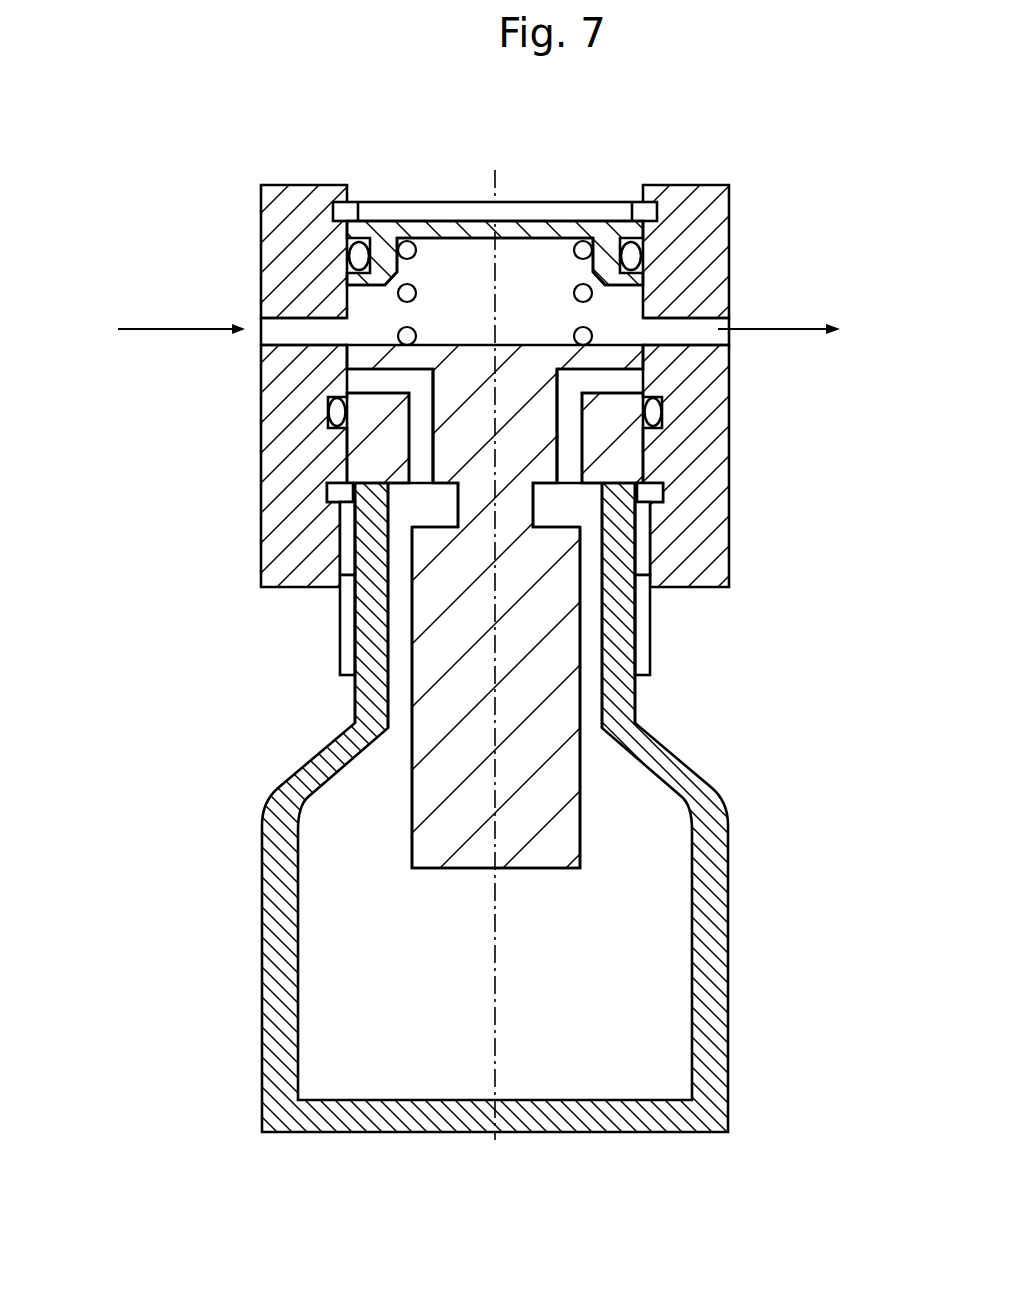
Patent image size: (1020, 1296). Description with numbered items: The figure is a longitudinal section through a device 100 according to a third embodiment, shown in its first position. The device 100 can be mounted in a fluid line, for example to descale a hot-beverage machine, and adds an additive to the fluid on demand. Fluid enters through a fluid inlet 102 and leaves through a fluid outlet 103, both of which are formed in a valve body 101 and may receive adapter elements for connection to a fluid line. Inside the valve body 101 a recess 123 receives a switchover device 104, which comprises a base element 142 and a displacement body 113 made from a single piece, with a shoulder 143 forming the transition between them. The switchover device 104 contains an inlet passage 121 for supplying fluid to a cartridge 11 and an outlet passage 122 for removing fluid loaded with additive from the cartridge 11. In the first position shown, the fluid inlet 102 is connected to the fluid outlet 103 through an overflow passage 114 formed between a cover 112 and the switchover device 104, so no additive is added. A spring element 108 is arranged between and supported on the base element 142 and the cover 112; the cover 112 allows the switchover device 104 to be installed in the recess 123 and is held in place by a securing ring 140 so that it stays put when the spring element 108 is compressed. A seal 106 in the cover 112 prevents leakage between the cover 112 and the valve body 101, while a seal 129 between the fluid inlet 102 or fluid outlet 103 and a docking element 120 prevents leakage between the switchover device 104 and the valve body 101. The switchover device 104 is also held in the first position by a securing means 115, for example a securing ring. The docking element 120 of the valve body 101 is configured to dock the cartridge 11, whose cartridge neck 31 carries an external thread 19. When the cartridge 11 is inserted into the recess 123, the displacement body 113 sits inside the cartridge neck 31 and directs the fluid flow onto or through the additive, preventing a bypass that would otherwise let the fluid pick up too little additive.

The device 100 is at (214, 235).
The valve body 101 is at (270, 292).
The fluid inlet 102 is at (275, 325).
The fluid outlet 103 is at (715, 338).
The switchover device 104 is at (510, 465).
The seal 106 is at (637, 252).
The spring element 108 is at (583, 250).
The cover 112 is at (468, 235).
The displacement body 113 is at (538, 845).
The overflow passage 114 is at (443, 283).
The securing means 115 is at (330, 492).
The docking element 120 is at (340, 548).
The inlet passage 121 is at (418, 446).
The outlet passage 122 is at (620, 381).
The recess 123 is at (643, 303).
The seal 129 is at (338, 410).
The securing ring 140 is at (637, 213).
The base element 142 is at (540, 432).
The shoulder 143 is at (592, 484).
The cartridge 11 is at (705, 1032).
The external thread 19 is at (645, 635).
The cartridge neck 31 is at (373, 633).